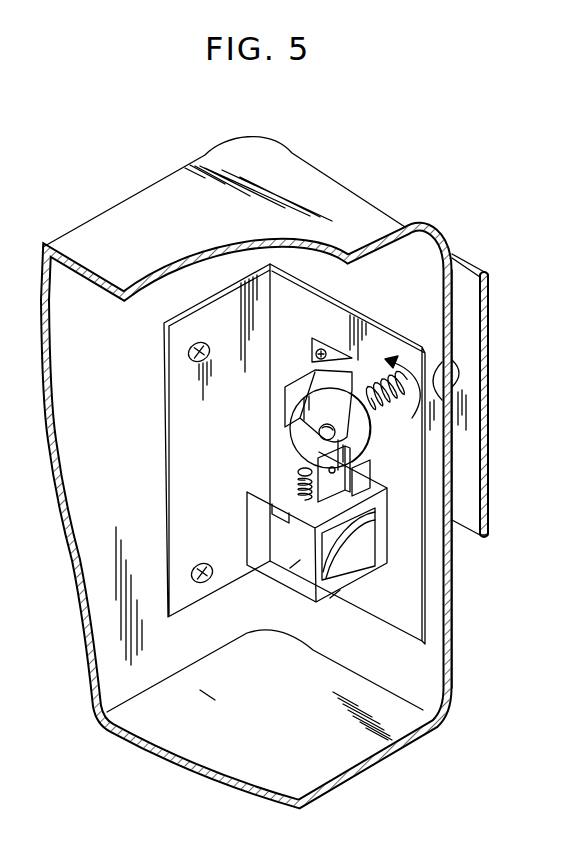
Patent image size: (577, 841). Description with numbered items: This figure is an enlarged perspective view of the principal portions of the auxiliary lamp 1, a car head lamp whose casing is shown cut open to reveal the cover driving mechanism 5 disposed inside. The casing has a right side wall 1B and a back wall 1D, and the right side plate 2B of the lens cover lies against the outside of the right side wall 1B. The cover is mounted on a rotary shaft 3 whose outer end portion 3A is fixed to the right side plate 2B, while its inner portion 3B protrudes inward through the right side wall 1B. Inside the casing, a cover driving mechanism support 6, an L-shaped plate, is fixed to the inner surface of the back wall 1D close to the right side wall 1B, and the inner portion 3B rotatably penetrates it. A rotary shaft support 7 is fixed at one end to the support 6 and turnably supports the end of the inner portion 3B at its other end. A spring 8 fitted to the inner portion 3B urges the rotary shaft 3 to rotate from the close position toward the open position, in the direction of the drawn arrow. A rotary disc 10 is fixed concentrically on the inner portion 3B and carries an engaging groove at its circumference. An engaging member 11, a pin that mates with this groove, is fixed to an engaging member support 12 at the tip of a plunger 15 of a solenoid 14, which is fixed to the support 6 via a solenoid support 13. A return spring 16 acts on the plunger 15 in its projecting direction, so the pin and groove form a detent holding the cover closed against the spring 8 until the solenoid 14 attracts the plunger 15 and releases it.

The auxiliary lamp 1 is at (457, 664).
The right side wall 1B is at (434, 535).
The back wall 1D is at (116, 345).
The right side plate 2B is at (486, 281).
The rotary shaft 3 is at (378, 378).
The outer end portion 3A is at (460, 370).
The inner portion 3B is at (318, 435).
The cover driving mechanism 5 is at (258, 610).
The cover driving mechanism support 6 is at (182, 407).
The rotary shaft support 7 is at (293, 387).
The spring 8 is at (385, 400).
The rotary disc 10 is at (392, 465).
The engaging member 11 is at (335, 485).
The engaging member support 12 is at (345, 500).
The solenoid support 13 is at (300, 588).
The solenoid 14 is at (353, 553).
The plunger 15 is at (297, 487).
The return spring 16 is at (312, 500).